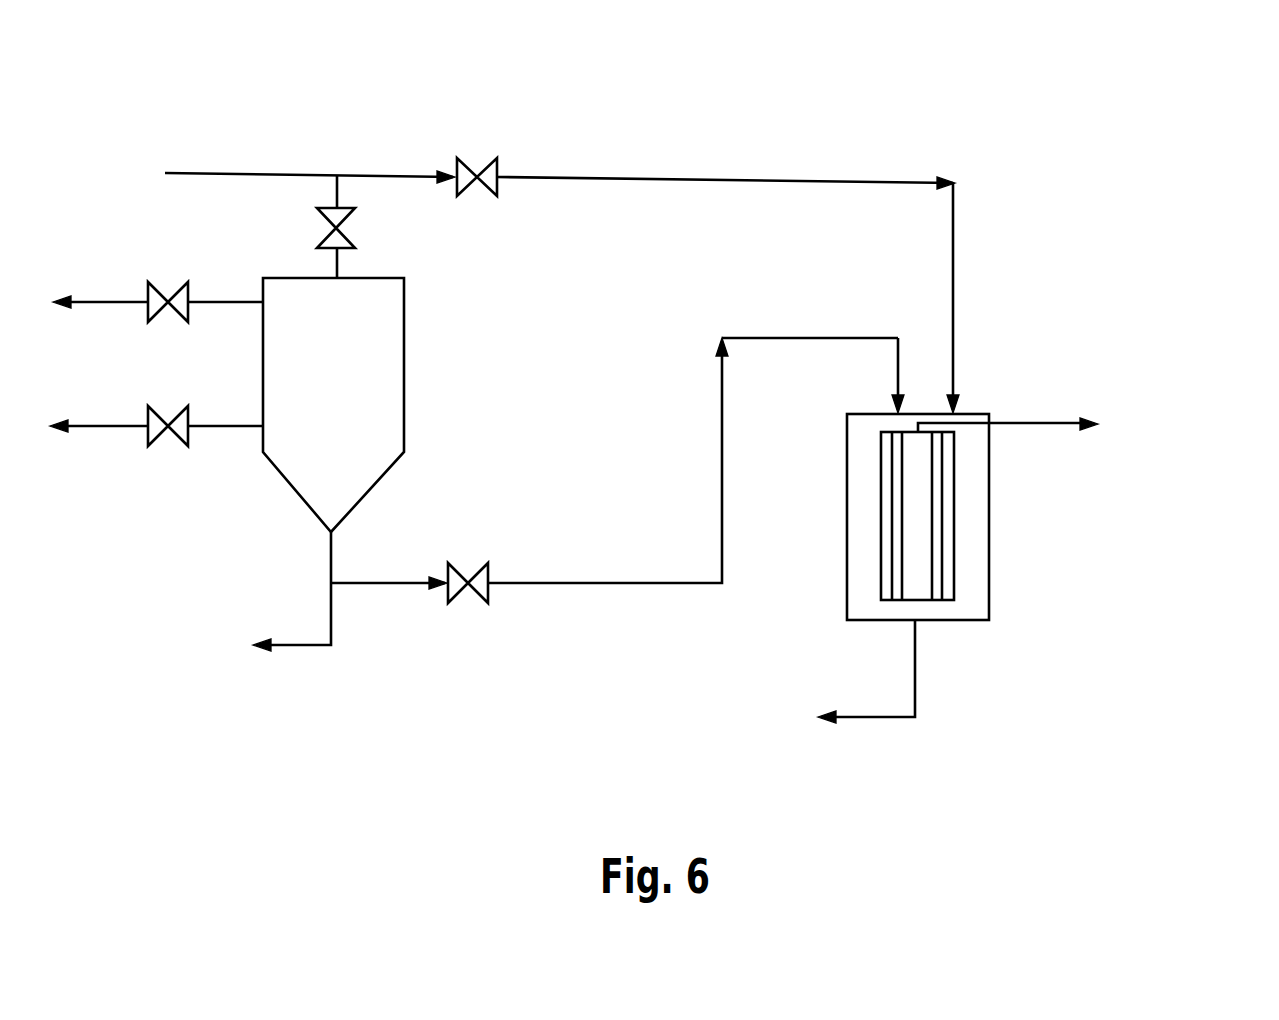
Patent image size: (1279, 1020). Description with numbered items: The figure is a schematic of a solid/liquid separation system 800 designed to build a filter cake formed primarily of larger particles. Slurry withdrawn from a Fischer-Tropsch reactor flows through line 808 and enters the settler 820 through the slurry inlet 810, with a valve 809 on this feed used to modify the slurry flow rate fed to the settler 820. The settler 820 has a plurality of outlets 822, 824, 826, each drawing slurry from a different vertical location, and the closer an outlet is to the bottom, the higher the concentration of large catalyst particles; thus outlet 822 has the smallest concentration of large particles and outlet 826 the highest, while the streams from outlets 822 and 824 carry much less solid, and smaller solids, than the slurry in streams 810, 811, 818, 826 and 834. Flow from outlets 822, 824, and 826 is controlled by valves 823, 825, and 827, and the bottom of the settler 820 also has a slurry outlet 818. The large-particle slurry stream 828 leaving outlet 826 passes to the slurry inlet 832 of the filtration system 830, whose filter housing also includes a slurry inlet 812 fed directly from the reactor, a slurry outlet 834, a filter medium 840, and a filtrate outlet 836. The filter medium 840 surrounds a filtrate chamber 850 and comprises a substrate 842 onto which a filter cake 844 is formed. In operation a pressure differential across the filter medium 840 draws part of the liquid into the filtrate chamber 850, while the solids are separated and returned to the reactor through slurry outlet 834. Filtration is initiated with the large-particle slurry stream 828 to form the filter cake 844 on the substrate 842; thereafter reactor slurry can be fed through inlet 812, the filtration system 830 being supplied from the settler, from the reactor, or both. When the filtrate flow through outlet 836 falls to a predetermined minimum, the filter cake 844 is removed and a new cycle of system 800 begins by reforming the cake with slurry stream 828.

The solid/liquid separation system 800 is at (773, 148).
The line 808 is at (288, 175).
The valve 809 is at (352, 232).
The slurry inlet 810 is at (337, 260).
The slurry stream 811 is at (487, 160).
The line / slurry inlet 812 is at (953, 273).
The slurry outlet 818 is at (290, 645).
The settler 820 is at (362, 396).
The outlet 822 is at (220, 302).
The valve 823 is at (148, 287).
The outlet 824 is at (222, 426).
The valve 825 is at (148, 410).
The outlet 826 is at (391, 583).
The valve 827 is at (460, 597).
The slurry stream 828 is at (825, 338).
The slurry inlet 832 is at (898, 368).
The filtration system / filter housing 830 is at (1088, 470).
The slurry outlet 834 is at (880, 717).
The filtrate outlet 836 is at (1038, 423).
The filter medium 840 is at (985, 592).
The substrate 842 is at (937, 595).
The filter cake 844 is at (952, 590).
The filtrate chamber 850 is at (920, 544).